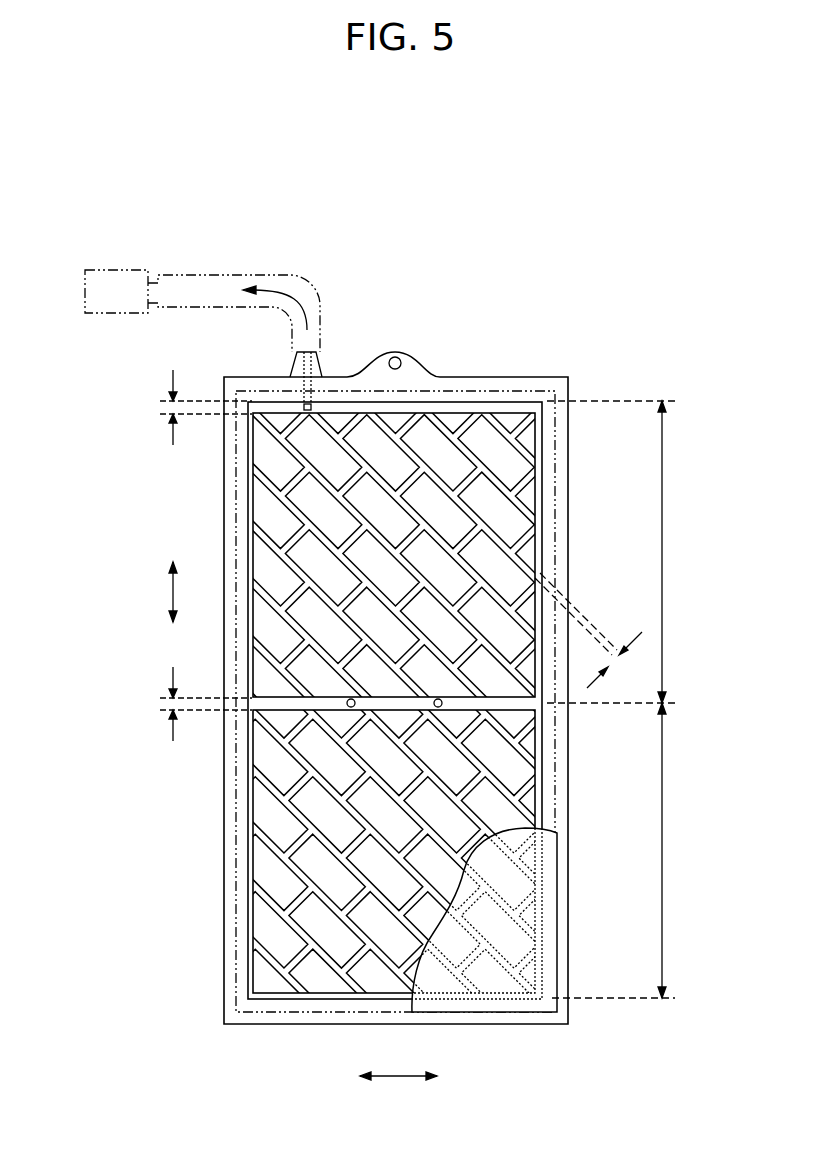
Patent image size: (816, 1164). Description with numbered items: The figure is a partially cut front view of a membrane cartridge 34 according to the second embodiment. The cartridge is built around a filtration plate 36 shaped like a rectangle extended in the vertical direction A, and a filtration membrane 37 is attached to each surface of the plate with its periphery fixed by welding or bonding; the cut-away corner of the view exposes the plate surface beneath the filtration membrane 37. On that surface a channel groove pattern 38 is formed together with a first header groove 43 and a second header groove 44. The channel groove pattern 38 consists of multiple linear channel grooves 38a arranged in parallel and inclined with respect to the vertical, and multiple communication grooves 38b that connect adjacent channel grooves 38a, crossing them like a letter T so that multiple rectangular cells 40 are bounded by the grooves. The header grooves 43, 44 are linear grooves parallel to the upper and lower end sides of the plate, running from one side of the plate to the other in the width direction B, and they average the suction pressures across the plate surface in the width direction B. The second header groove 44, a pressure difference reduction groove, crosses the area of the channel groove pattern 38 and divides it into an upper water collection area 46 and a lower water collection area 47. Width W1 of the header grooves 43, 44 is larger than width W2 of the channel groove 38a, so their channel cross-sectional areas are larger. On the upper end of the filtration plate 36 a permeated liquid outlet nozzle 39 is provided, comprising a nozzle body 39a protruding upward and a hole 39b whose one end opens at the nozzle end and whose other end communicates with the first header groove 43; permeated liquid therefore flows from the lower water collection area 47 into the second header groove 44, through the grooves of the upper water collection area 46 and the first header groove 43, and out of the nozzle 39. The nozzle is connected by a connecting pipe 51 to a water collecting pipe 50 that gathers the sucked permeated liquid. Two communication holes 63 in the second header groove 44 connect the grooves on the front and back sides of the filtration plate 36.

The membrane cartridge 34 is at (583, 355).
The filtration plate 36 is at (223, 988).
The filtration membrane 37 is at (493, 973).
The channel groove pattern 38 is at (98, 461).
The channel groove 38a is at (290, 466).
The communication groove 38b is at (292, 538).
The permeated liquid outlet nozzle 39 is at (316, 343).
The nozzle body 39a is at (292, 360).
The hole 39b is at (325, 363).
The rectangular cell 40 is at (497, 567).
The first header groove 43 is at (440, 407).
The second header groove 44 is at (270, 694).
The upper water collection area 46 is at (623, 552).
The lower water collection area 47 is at (626, 850).
The water collecting pipe 50 is at (116, 290).
The connecting pipe 51 is at (206, 300).
The communication hole 63 is at (351, 708).
The width of the header grooves W1 is at (185, 555).
The width of the channel groove W2 is at (593, 634).
The vertical direction A is at (161, 592).
The width direction B is at (398, 1089).